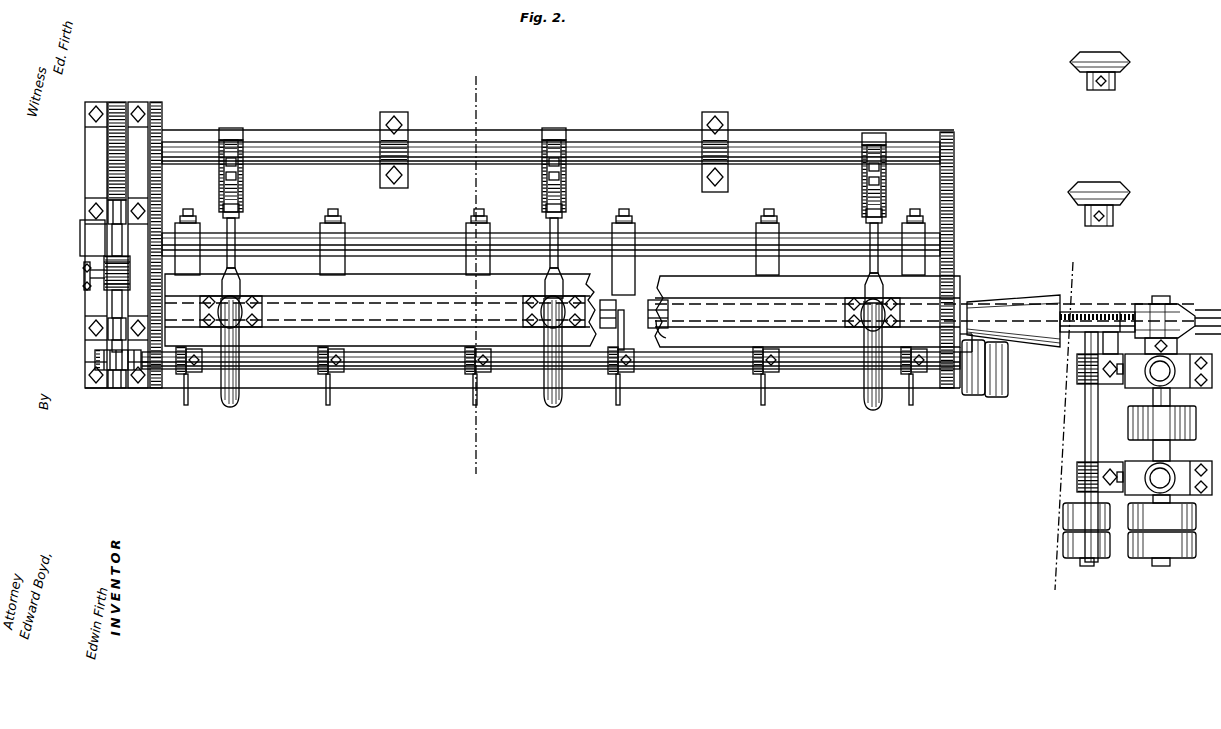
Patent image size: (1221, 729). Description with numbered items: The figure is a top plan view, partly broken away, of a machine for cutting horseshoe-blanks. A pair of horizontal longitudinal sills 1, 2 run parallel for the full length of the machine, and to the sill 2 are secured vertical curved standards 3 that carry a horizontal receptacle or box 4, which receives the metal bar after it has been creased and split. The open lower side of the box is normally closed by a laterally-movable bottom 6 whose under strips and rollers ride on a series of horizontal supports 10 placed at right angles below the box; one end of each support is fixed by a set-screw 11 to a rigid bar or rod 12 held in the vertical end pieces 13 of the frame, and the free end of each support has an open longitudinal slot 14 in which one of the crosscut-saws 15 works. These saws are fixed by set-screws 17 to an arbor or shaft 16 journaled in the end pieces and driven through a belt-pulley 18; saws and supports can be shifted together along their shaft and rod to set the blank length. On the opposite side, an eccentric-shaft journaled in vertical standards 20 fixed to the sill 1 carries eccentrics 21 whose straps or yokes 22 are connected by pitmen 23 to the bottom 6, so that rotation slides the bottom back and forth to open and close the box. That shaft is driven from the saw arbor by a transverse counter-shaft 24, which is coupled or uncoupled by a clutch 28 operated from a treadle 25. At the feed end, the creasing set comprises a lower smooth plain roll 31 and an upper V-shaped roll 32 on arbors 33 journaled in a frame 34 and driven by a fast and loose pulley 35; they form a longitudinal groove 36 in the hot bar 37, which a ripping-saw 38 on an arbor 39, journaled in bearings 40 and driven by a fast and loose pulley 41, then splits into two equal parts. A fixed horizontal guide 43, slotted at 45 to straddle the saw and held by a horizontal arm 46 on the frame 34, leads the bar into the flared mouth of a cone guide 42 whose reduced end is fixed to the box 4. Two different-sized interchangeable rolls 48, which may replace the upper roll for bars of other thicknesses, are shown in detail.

The sill 1 is at (594, 142).
The sill 2 is at (522, 368).
The vertical curved standard 3 is at (551, 366).
The receptacle or box 4 is at (680, 312).
The laterally-movable bottom 6 is at (568, 313).
The horizontal support 10 is at (493, 264).
The set-screw 11 is at (551, 209).
The rigid bar or rod 12 is at (392, 242).
The vertical end piece 13 is at (153, 104).
The open longitudinal slot 14 is at (624, 314).
The crosscut-saw 15 is at (762, 400).
The saw arbor or shaft 16 is at (551, 369).
The set-screw 17 is at (444, 160).
The belt-pulley 18 is at (985, 383).
The vertical standard 20 is at (390, 112).
The eccentric 21 is at (244, 183).
The eccentric strap or yoke 22 is at (230, 127).
The pitman 23 is at (868, 238).
The counter-shaft 24 is at (124, 234).
The treadle 25 is at (92, 255).
The clutch 28 is at (121, 313).
The lower smooth plain roll 31 is at (1190, 300).
The upper V-shaped roll 32 is at (1158, 297).
The roll arbor or shaft 33 is at (1170, 402).
The frame 34 is at (1198, 457).
The fast and loose pulley 35 is at (1170, 534).
The longitudinal groove or recess 36 is at (672, 334).
The bar of metal 37 is at (664, 308).
The ripping-saw 38 is at (1100, 316).
The arbor or shaft 39 is at (1098, 428).
The bearing 40 is at (1077, 374).
The fast and loose pulley 41 is at (1063, 528).
The funnel or cone guide 42 is at (1010, 302).
The fixed guide 43 is at (1086, 312).
The vertical slot 45 is at (1122, 318).
The horizontal arm 46 is at (1145, 346).
The different-sized roll 48 is at (1086, 84).